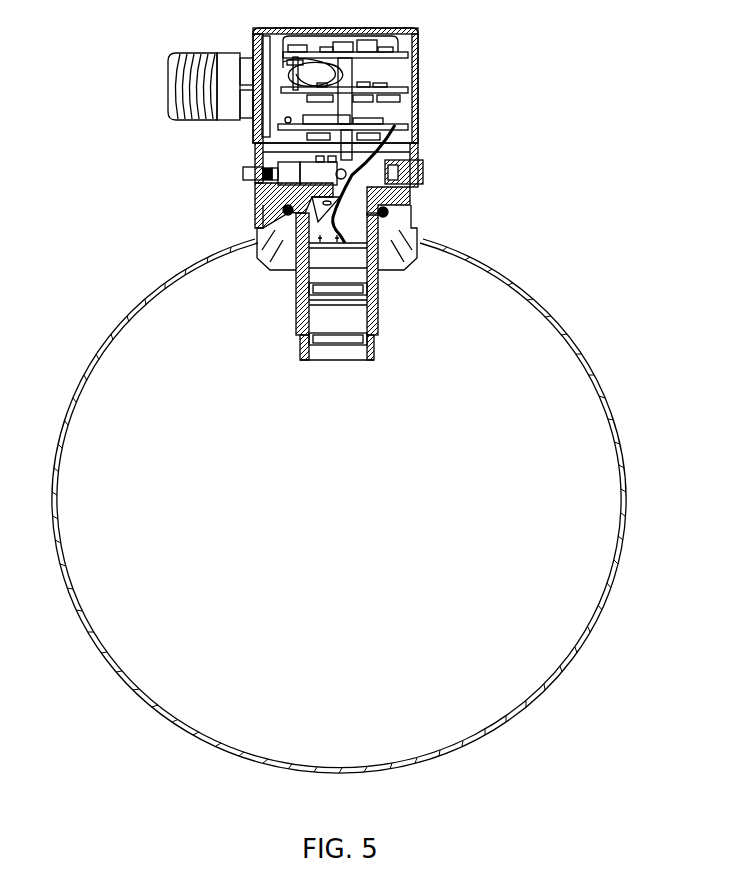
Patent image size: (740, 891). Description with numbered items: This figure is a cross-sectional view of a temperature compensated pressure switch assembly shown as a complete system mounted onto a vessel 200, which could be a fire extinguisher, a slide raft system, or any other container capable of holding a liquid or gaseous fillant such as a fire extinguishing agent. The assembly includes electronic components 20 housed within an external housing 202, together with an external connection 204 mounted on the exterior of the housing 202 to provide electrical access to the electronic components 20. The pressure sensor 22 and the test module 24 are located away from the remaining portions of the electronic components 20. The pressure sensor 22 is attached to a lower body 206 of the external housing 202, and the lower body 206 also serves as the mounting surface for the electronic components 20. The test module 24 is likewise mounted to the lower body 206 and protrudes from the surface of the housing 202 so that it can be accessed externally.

The electronic components 20 is at (418, 67).
The pressure sensor 22 is at (327, 352).
The test module 24 is at (245, 172).
The vessel 200 is at (558, 322).
The external housing 202 is at (418, 130).
The external connection 204 is at (168, 76).
The lower body 206 is at (413, 200).